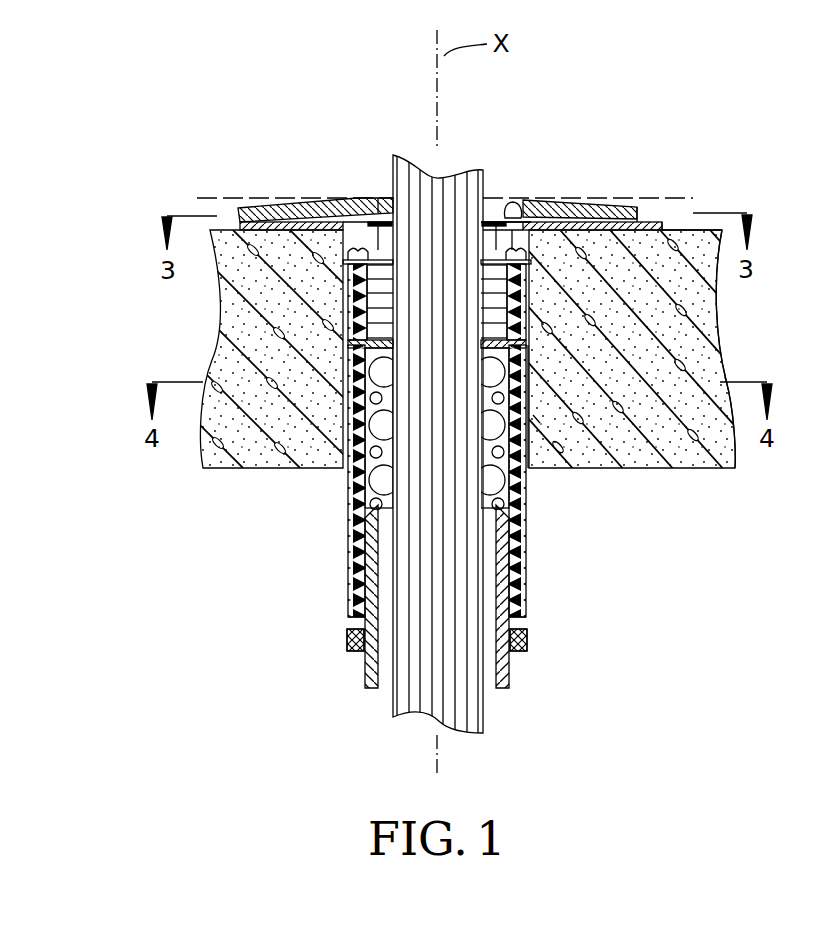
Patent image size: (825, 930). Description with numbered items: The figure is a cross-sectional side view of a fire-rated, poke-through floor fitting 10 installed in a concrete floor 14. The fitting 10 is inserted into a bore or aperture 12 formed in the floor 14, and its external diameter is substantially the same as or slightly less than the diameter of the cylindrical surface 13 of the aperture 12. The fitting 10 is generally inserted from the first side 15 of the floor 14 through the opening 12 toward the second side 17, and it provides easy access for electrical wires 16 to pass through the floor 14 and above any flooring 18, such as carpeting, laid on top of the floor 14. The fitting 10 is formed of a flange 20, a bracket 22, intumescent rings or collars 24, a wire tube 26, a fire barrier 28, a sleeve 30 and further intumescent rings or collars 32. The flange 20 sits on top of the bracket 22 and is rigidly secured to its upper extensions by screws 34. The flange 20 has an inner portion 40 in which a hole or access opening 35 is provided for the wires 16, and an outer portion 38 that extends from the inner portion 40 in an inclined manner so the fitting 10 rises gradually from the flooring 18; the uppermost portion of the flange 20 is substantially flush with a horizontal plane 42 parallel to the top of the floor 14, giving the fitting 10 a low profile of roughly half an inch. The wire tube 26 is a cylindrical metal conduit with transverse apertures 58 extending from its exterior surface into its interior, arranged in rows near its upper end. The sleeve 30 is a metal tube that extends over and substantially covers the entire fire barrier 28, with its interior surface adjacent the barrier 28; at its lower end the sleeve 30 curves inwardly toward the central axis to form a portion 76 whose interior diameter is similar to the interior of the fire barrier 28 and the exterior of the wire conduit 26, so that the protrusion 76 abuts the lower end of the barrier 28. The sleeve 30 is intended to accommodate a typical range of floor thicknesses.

The fitting 10 is at (477, 153).
The aperture 12 is at (559, 471).
The cylindrical surface 13 is at (540, 423).
The concrete floor 14 is at (683, 488).
The first side 15 is at (697, 231).
The electrical wires 16 is at (518, 717).
The second side 17 is at (724, 468).
The flooring 18 is at (684, 205).
The flange 20 is at (652, 190).
The bracket 22 is at (517, 222).
The intumescent rings or collars 24 is at (556, 302).
The wire tube 26 is at (340, 595).
The fire barrier 28 is at (523, 576).
The sleeve 30 is at (553, 602).
The intumescent rings or collars 32 is at (322, 647).
The screws 34 is at (557, 228).
The aperture 35 is at (382, 207).
The outer portion 38 is at (613, 208).
The inner portion 40 is at (361, 207).
The horizontal plane 42 is at (253, 201).
The apertures 58 is at (385, 496).
The portion 76 is at (357, 617).